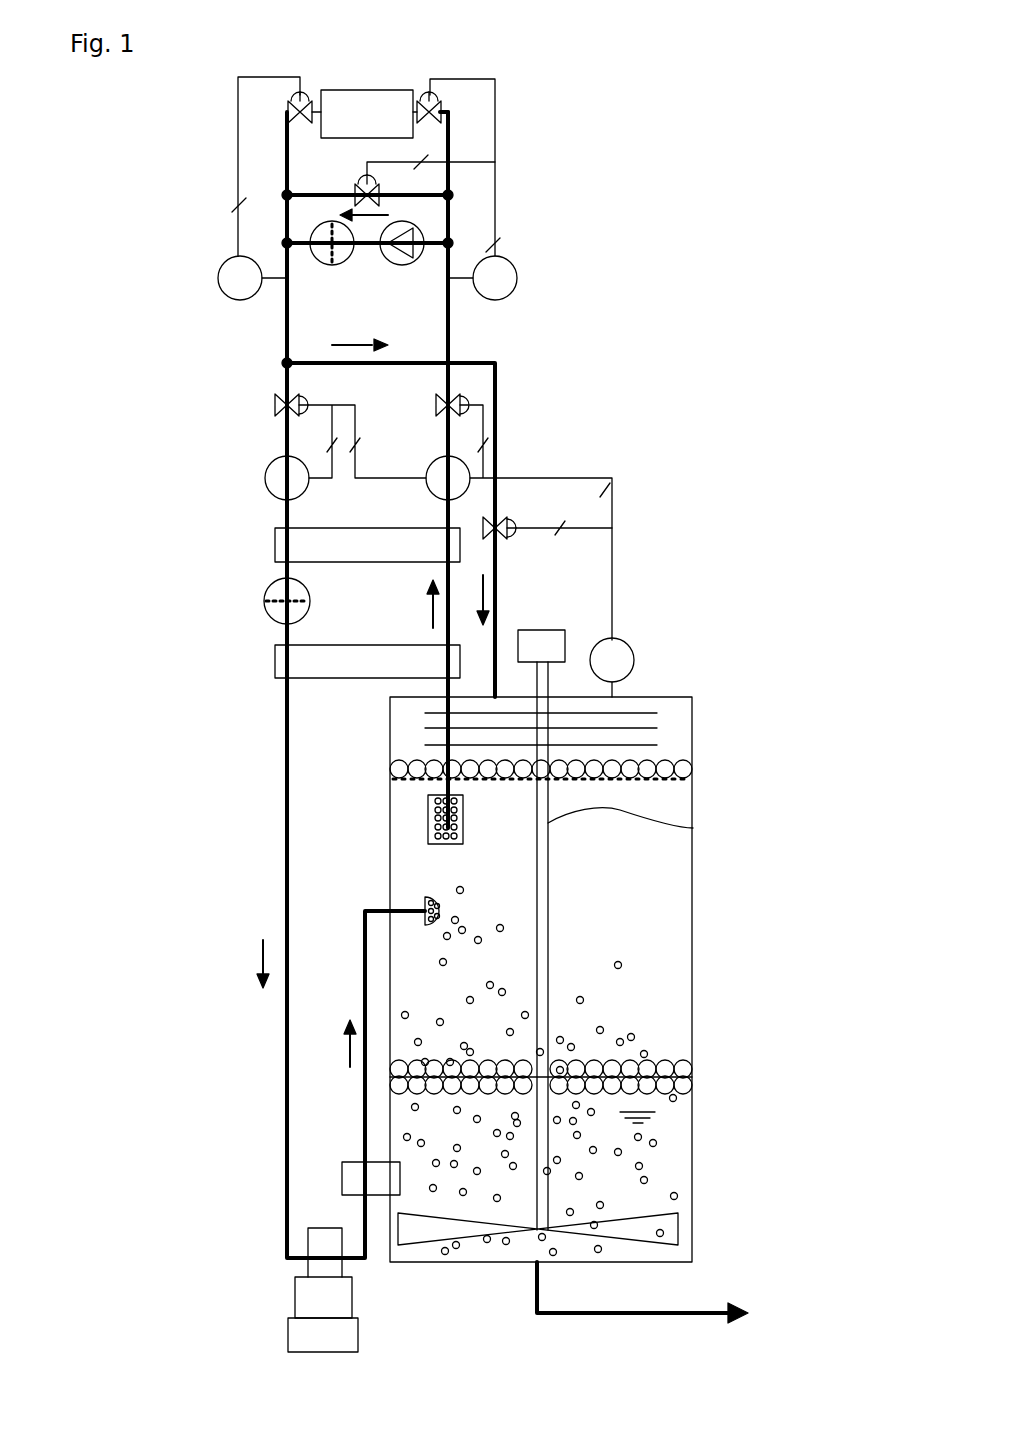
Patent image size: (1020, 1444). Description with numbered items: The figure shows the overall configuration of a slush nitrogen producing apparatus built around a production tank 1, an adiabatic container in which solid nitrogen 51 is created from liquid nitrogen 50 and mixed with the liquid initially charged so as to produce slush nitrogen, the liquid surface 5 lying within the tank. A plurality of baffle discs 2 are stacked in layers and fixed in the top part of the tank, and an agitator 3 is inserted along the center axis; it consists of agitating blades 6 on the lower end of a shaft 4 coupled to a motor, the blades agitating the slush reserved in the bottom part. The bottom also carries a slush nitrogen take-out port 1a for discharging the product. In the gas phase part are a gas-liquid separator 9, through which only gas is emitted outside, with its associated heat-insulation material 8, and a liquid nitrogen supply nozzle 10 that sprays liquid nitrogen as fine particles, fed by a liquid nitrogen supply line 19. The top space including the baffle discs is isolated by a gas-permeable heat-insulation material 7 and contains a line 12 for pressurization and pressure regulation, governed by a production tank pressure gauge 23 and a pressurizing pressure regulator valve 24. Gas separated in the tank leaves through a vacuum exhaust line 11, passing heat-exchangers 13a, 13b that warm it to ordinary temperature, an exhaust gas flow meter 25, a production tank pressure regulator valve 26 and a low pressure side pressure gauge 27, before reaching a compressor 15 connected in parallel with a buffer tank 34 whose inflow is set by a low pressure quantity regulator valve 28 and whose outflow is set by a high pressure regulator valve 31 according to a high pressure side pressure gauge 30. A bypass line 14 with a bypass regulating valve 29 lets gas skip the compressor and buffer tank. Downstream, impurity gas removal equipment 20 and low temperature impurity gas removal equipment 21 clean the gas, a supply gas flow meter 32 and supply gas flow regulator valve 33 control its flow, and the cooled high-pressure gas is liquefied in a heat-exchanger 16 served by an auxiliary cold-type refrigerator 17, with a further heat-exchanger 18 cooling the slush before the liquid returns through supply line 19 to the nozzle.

The slush nitrogen producing tank 1 is at (693, 880).
The slush nitrogen take-out port 1a is at (535, 1265).
The baffle discs 2 is at (650, 727).
The agitator 3 is at (552, 630).
The shaft 4 is at (526, 632).
The liquid surface 5 is at (693, 828).
The agitating blade 6 is at (434, 1238).
The heat-insulation material 7 is at (683, 768).
The heat-insulation material for gas-liquid separating 8 is at (693, 1077).
The gas-liquid separator 9 is at (428, 818).
The liquid nitrogen supply nozzle 10 is at (423, 903).
The vacuum exhaust line 11 is at (425, 728).
The pressurized pressure regulation line 12 is at (498, 562).
The heat-exchanger 13a is at (275, 660).
The heat-exchanger 13b is at (275, 546).
The bypass line 14 is at (413, 195).
The compressor 15 is at (406, 266).
The heat-exchanger 16 is at (308, 1240).
The auxiliary cold-type refrigerator 17 is at (288, 1336).
The heat-exchanger 18 is at (352, 1162).
The liquid nitrogen supply line 19 is at (364, 985).
The impurity gas removal equipment 20 is at (330, 266).
The low temperature impurity gas removal equipment 21 is at (264, 598).
The production tank pressure gauge 23 is at (626, 646).
The pressurizing pressure regulator valve 24 is at (508, 520).
The exhaust gas flow meter 25 is at (428, 468).
The production tank pressure regulator valve 26 is at (438, 398).
The low pressure side pressure gauge 27 is at (510, 262).
The low pressure quantity regulator valve 28 is at (440, 102).
The bypass regulating valve 29 is at (360, 188).
The high pressure side pressure gauge 30 is at (225, 262).
The high pressure regulator valve 31 is at (292, 103).
The supply gas flow meter 32 is at (266, 468).
The supply gas flow regulator valve 33 is at (278, 398).
The buffer tank 34 is at (372, 90).
The liquid nitrogen 50 is at (693, 1152).
The solid nitrogen 51 is at (634, 1036).